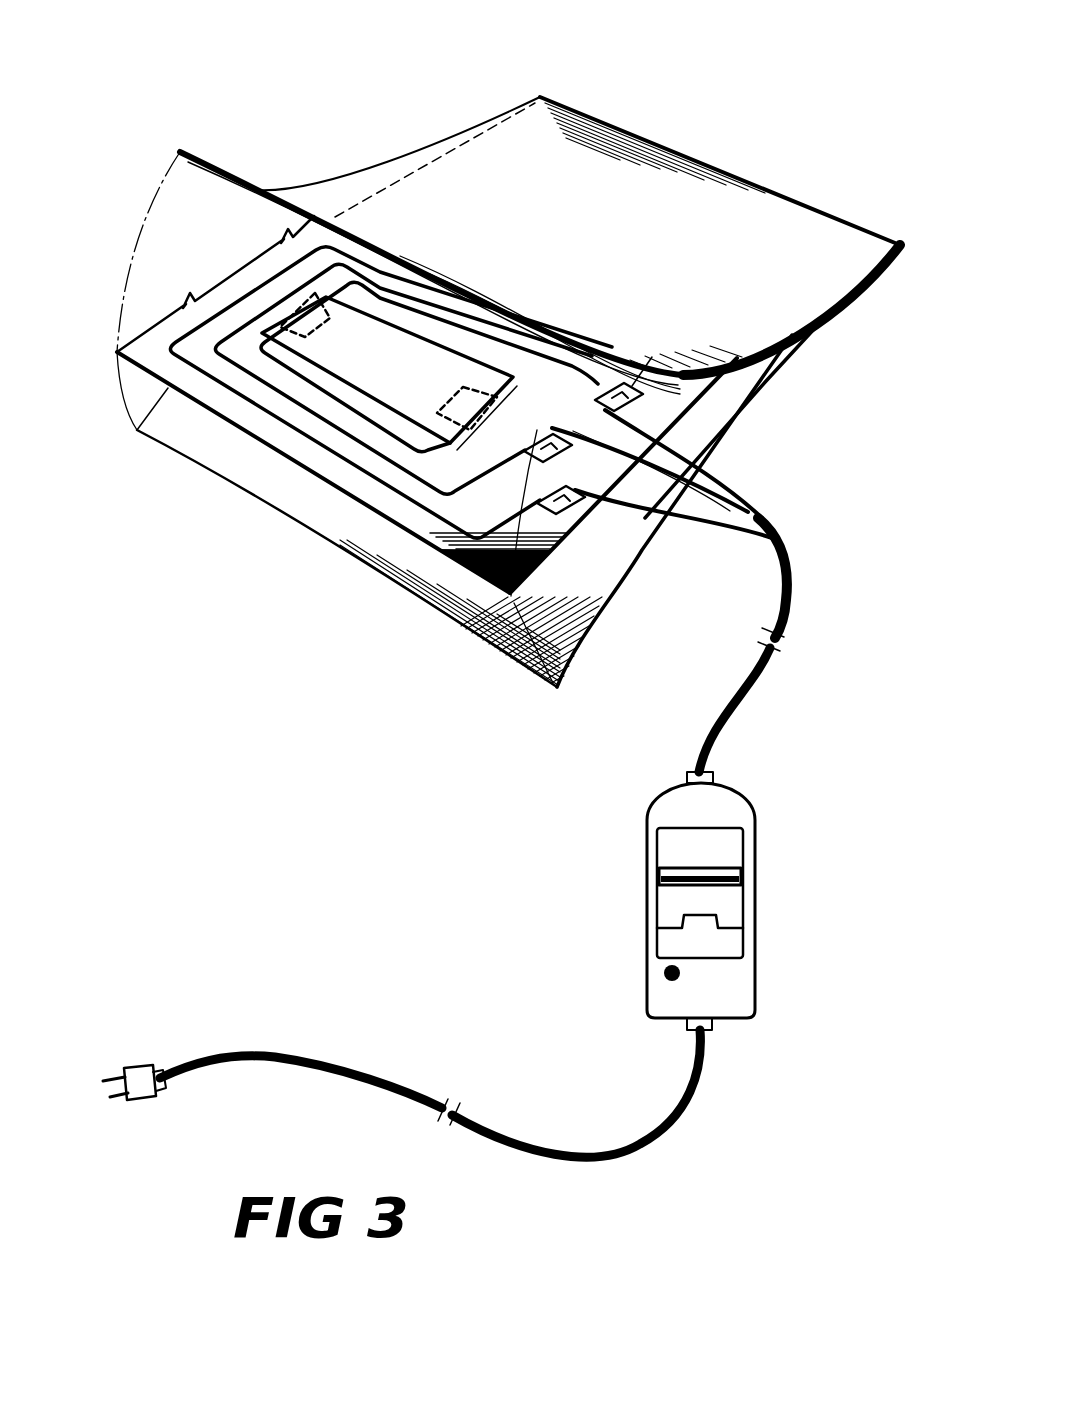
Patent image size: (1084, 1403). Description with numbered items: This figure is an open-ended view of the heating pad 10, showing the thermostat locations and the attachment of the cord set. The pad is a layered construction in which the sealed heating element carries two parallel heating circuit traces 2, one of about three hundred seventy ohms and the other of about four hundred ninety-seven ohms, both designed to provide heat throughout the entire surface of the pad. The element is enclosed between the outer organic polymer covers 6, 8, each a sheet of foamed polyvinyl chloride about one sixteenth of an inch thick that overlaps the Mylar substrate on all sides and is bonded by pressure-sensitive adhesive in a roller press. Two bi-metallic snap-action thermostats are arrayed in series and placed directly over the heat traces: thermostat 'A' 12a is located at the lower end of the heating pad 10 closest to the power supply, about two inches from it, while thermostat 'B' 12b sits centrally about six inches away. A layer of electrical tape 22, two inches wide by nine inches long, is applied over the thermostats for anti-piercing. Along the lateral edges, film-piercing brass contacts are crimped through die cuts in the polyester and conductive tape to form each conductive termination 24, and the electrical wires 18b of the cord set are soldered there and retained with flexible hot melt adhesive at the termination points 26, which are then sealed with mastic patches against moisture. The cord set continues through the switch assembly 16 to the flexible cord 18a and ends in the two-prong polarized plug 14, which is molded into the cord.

The heating pad 10 is at (359, 112).
The heating circuit traces 2 is at (250, 422).
The outer organic polymer cover 6 is at (308, 198).
The outer organic polymer cover 8 is at (326, 516).
The thermostat 'A' 12a is at (470, 392).
The thermostat 'B' 12b is at (295, 320).
The layer of electrical tape 22 is at (392, 340).
The conductive termination 24 is at (617, 383).
The termination points 26 is at (648, 364).
The switch assembly 16 is at (647, 903).
The flexible cord 18a is at (397, 1087).
The electrical wires 18b is at (757, 677).
The plug 14 is at (140, 1092).